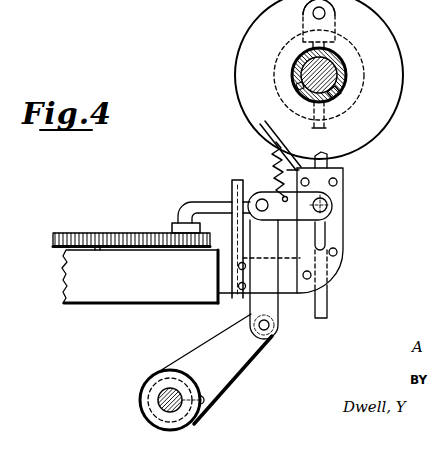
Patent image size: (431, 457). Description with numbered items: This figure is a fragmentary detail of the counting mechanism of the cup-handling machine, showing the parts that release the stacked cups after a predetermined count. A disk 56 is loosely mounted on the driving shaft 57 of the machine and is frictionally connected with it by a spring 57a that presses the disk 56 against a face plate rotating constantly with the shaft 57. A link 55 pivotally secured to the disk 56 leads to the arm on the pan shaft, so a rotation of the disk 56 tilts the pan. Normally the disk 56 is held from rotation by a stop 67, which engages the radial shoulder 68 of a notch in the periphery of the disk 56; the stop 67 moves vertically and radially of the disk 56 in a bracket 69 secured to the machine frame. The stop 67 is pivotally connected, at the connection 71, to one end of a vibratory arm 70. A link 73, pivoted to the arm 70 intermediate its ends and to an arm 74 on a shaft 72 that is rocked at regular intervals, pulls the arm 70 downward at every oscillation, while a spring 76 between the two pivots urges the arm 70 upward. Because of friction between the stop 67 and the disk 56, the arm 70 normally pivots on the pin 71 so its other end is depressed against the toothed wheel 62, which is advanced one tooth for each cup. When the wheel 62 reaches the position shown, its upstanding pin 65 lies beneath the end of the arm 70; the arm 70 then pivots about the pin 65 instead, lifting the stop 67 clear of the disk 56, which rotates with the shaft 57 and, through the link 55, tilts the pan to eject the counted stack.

The link 55 is at (303, 44).
The disk 56 is at (400, 112).
The driving shaft 57 is at (333, 81).
The spring 57a is at (343, 96).
The toothed wheel 62 is at (120, 233).
The pin 65 is at (171, 226).
The stop 67 is at (328, 310).
The radial shoulder 68 is at (330, 157).
The bracket 69 is at (343, 229).
The vibratory arm 70 is at (207, 200).
The pivotal connection 71 is at (326, 204).
The shaft 72 is at (160, 390).
The link 73 is at (272, 300).
The arm 74 is at (223, 342).
The spring 76 is at (272, 158).